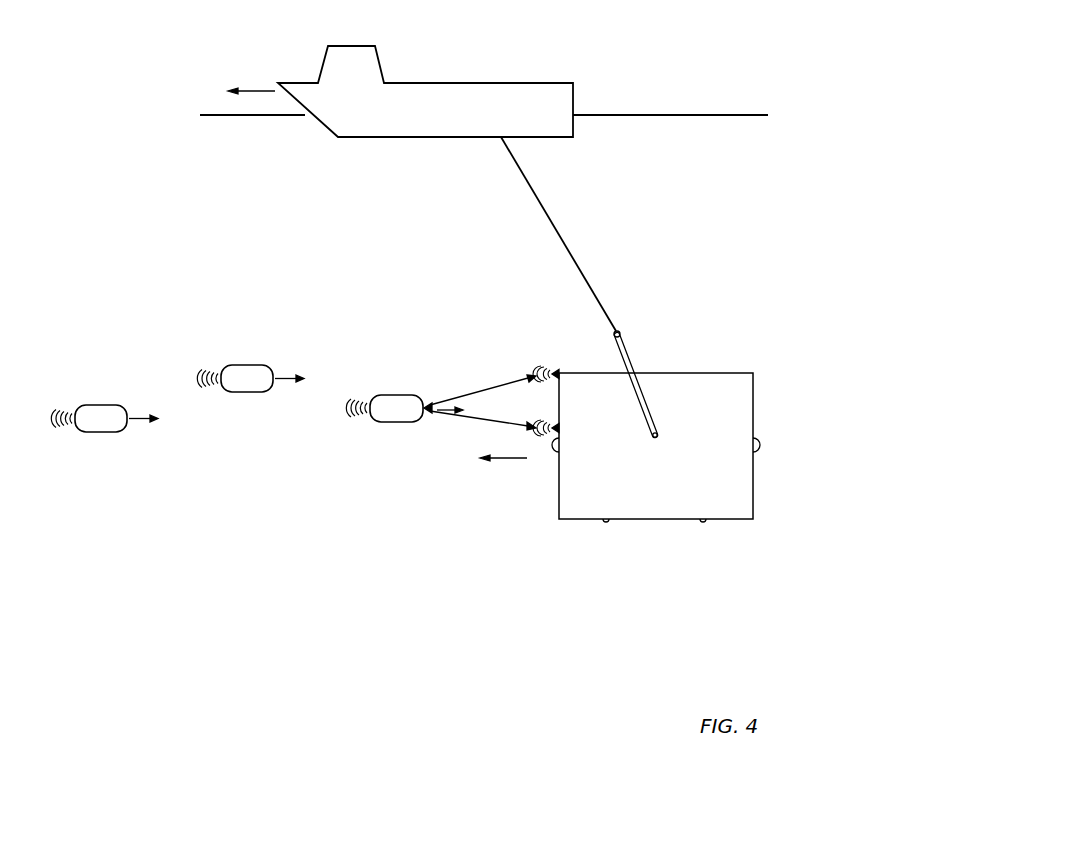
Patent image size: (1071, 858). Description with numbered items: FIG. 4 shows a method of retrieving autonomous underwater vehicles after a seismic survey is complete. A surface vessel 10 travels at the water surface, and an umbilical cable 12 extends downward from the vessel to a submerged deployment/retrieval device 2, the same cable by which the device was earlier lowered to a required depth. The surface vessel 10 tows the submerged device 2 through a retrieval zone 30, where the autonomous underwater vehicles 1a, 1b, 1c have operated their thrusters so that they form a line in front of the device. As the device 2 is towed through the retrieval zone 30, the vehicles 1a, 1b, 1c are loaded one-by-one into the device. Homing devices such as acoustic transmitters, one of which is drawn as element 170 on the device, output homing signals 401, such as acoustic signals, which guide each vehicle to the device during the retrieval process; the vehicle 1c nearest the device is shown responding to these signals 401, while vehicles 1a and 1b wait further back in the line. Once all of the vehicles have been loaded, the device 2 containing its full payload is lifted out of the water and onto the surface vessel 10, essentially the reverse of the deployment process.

The surface vessel 10 is at (437, 82).
The umbilical cable 12 is at (542, 211).
The acoustic transmitter / rod 170 is at (630, 354).
The deployment/retrieval device 2 is at (578, 546).
The homing signals 401 is at (550, 366).
The autonomous underwater vehicle 1a is at (104, 405).
The autonomous underwater vehicle 1b is at (250, 365).
The autonomous underwater vehicle 1c is at (401, 396).
The retrieval zone 30 is at (275, 461).